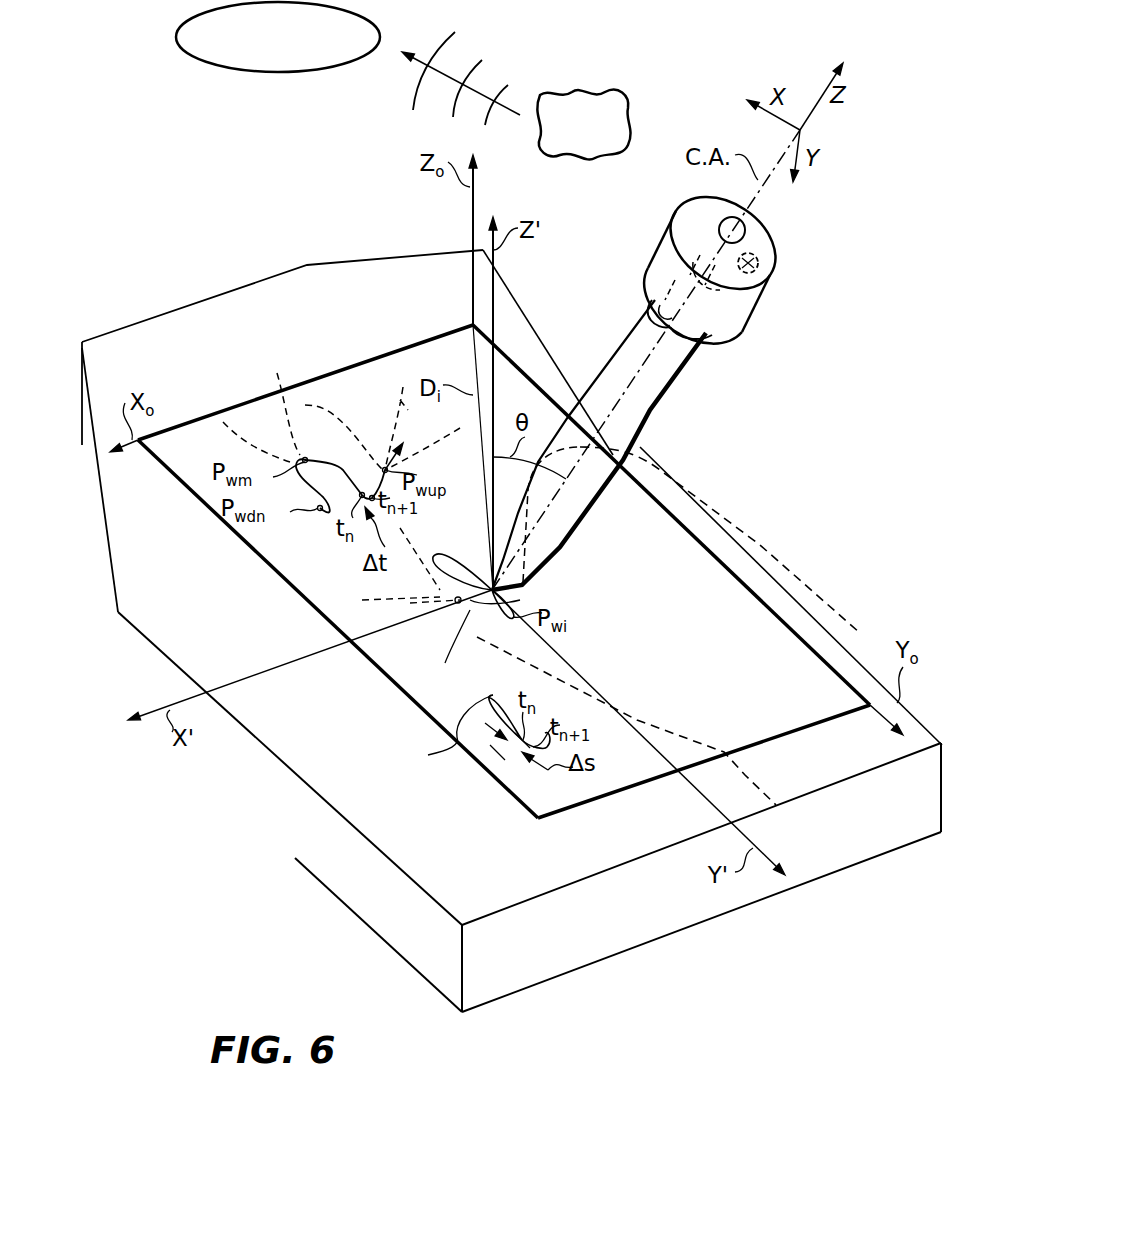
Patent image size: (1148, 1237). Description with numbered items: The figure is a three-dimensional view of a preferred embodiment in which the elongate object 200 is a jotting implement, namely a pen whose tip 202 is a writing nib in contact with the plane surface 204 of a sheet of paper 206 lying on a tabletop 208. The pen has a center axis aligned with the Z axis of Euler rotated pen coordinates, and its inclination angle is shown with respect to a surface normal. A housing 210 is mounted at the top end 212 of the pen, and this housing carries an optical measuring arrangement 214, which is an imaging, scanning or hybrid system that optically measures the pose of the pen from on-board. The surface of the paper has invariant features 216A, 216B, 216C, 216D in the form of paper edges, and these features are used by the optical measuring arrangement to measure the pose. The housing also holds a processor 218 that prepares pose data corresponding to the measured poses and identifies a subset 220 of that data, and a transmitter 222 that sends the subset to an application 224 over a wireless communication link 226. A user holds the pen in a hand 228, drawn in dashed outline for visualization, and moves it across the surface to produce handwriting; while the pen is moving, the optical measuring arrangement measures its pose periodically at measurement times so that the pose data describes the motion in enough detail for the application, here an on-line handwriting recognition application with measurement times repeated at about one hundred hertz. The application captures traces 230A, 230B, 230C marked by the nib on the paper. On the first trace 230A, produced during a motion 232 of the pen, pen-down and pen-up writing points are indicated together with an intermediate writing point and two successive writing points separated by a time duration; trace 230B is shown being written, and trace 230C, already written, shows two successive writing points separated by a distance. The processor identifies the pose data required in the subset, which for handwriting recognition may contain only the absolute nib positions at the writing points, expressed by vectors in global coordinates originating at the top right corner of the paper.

The elongate object 200 is at (636, 374).
The tip 202 is at (500, 587).
The plane surface 204 is at (504, 563).
The sheet of paper 206 is at (486, 827).
The tabletop 208 is at (377, 920).
The housing 210 is at (780, 245).
The top end 212 is at (595, 213).
The optical measuring arrangement 214 is at (708, 318).
The invariant feature 216A is at (440, 337).
The invariant feature 216B is at (290, 588).
The invariant feature 216C is at (600, 800).
The invariant feature 216D is at (535, 380).
The processor 218 is at (760, 268).
The subset 220 is at (630, 120).
The transmitter 222 is at (722, 228).
The application 224 is at (270, 72).
The wireless communication link 226 is at (552, 36).
The hand 228 is at (825, 600).
The trace 230A is at (323, 513).
The trace 230B is at (418, 607).
The trace 230C is at (455, 732).
The motion 232 is at (327, 400).